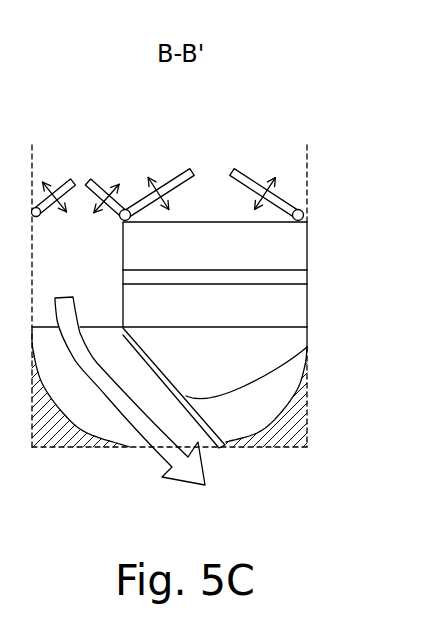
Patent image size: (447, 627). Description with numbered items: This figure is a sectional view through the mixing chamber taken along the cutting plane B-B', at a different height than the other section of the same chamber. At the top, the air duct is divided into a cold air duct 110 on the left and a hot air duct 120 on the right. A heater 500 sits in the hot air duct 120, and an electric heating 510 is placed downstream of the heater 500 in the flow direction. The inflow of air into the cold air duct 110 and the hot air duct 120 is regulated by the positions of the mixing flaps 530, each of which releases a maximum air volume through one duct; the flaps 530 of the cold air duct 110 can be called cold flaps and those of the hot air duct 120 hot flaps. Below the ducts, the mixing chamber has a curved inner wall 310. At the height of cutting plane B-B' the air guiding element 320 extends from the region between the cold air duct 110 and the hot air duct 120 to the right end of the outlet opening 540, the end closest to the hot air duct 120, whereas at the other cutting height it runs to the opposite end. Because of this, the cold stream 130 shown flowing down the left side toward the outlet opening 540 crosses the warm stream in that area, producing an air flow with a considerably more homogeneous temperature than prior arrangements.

The cold air duct 110 is at (101, 248).
The hot air duct 120 is at (317, 241).
The cold stream 130 is at (178, 474).
The curved inner wall 310 is at (446, 417).
The air guiding element 320 is at (446, 352).
The heater 500 is at (239, 249).
The electric heating 510 is at (296, 300).
The mixing flaps 530 is at (102, 185).
The outlet opening 540 is at (207, 446).